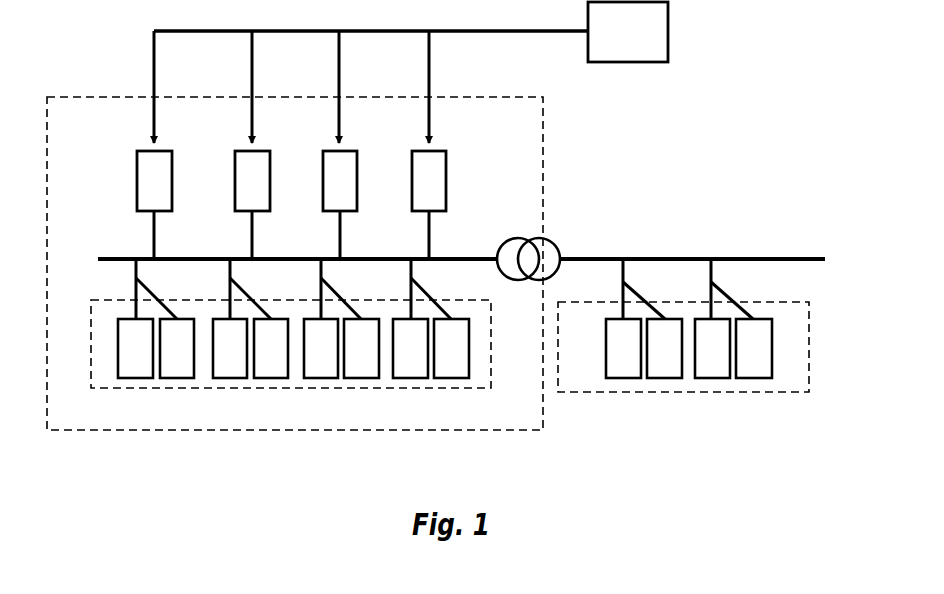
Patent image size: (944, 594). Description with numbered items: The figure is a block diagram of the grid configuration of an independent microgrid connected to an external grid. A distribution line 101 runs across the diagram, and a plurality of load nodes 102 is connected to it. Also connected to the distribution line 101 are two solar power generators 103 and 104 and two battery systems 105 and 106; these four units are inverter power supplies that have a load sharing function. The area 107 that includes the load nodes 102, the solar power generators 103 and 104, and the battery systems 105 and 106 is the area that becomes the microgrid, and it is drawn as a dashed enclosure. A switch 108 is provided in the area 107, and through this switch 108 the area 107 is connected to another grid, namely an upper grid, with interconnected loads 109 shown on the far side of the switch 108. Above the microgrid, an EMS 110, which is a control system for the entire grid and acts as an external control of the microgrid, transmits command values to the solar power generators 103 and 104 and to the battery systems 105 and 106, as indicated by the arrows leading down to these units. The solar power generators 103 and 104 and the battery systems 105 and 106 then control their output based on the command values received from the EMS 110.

The distribution line 101 is at (743, 257).
The load nodes 102 is at (291, 342).
The solar power generator 103 is at (235, 154).
The solar power generator 104 is at (323, 152).
The battery system 105 is at (137, 160).
The battery system 106 is at (412, 153).
The area 107 is at (295, 284).
The switch 108 is at (552, 242).
The interconnected loads 109 is at (683, 344).
The EMS 110 is at (668, 23).